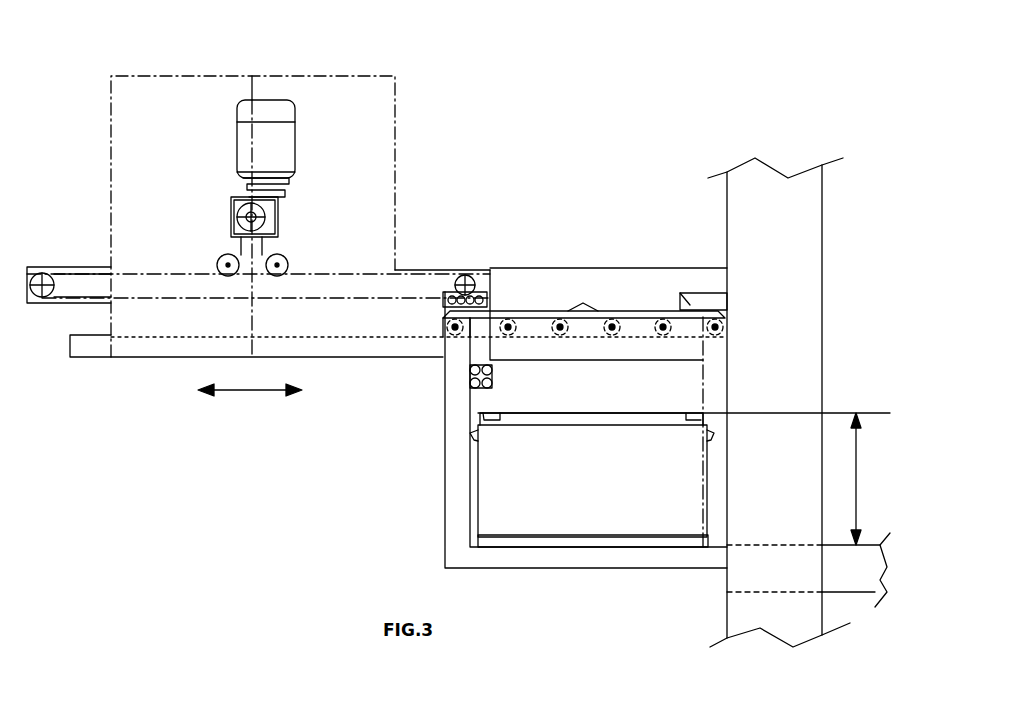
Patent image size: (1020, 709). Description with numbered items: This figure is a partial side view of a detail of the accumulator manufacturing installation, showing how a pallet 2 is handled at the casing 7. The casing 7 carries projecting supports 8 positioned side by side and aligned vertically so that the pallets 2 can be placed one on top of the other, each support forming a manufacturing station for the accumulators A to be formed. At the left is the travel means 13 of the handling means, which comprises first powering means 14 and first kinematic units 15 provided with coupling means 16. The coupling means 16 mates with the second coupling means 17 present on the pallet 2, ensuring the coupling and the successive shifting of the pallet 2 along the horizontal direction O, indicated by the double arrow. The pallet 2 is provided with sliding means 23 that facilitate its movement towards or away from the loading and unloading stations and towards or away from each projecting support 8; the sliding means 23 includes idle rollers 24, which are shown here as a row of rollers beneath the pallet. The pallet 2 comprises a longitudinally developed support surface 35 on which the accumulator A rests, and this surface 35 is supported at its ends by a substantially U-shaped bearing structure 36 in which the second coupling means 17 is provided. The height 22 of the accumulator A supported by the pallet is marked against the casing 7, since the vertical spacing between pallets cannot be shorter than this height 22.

The pallet 2 is at (440, 495).
The casing 7 is at (785, 197).
The projecting support 8 is at (650, 278).
The travel means 13 is at (338, 174).
The first powering means 14 is at (275, 145).
The first kinematic units 15 is at (320, 275).
The coupling means 16 is at (481, 276).
The second coupling means 17 is at (443, 303).
The height 22 is at (858, 475).
The sliding means 23 is at (585, 292).
The idle rollers 24 is at (660, 330).
The support surface 35 is at (625, 560).
The U-shaped bearing structure 36 is at (458, 437).
The accumulator A is at (578, 503).
The horizontal direction O is at (250, 392).